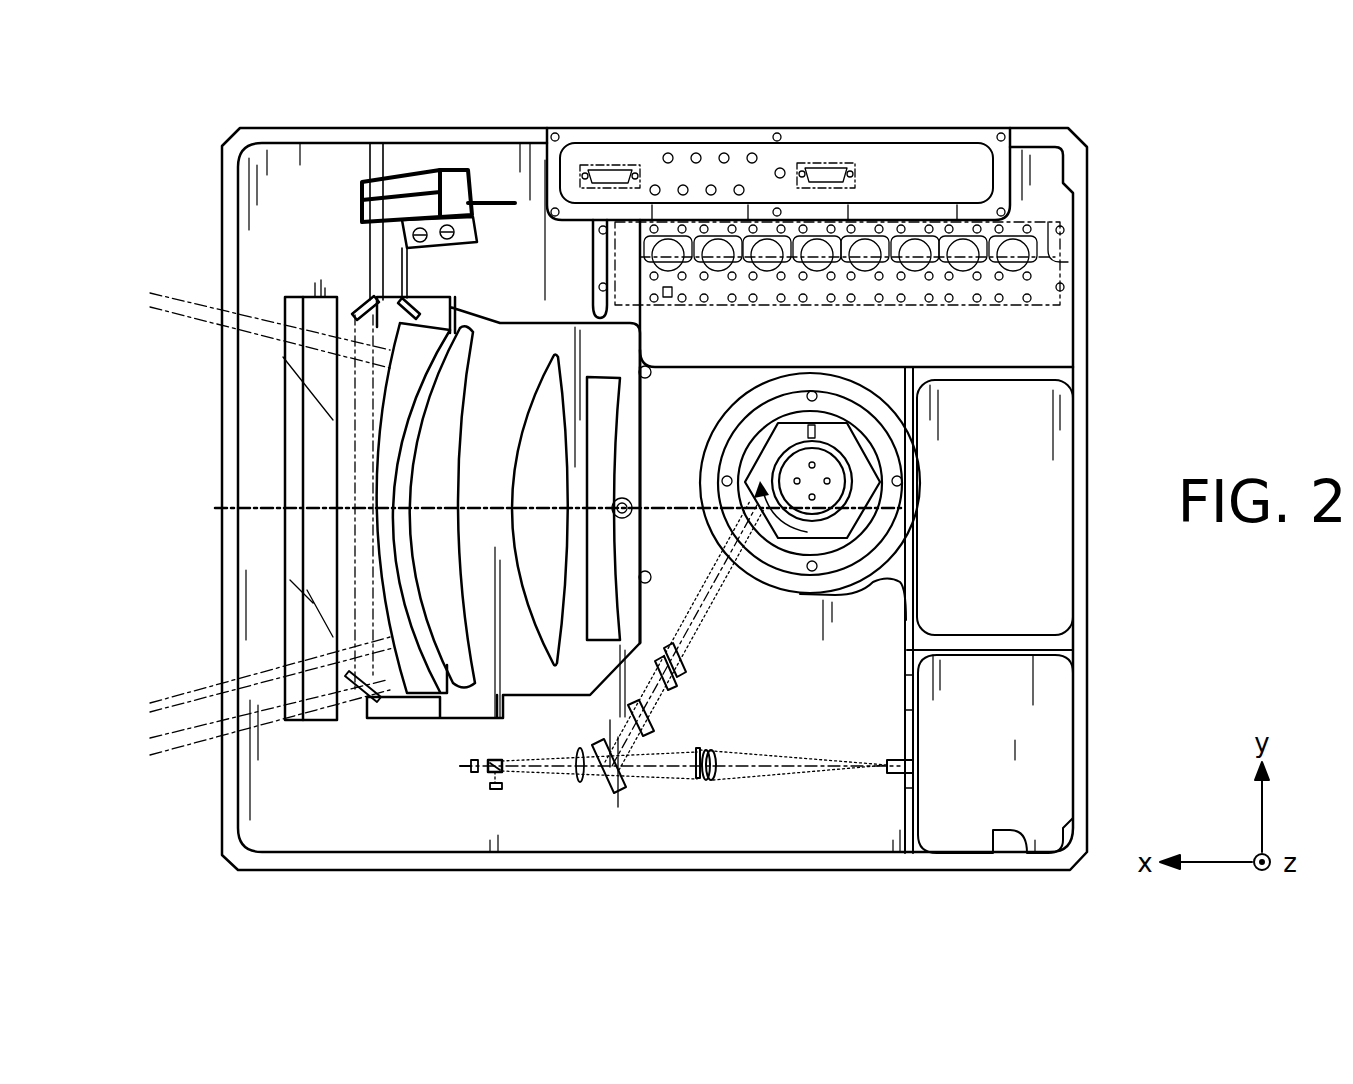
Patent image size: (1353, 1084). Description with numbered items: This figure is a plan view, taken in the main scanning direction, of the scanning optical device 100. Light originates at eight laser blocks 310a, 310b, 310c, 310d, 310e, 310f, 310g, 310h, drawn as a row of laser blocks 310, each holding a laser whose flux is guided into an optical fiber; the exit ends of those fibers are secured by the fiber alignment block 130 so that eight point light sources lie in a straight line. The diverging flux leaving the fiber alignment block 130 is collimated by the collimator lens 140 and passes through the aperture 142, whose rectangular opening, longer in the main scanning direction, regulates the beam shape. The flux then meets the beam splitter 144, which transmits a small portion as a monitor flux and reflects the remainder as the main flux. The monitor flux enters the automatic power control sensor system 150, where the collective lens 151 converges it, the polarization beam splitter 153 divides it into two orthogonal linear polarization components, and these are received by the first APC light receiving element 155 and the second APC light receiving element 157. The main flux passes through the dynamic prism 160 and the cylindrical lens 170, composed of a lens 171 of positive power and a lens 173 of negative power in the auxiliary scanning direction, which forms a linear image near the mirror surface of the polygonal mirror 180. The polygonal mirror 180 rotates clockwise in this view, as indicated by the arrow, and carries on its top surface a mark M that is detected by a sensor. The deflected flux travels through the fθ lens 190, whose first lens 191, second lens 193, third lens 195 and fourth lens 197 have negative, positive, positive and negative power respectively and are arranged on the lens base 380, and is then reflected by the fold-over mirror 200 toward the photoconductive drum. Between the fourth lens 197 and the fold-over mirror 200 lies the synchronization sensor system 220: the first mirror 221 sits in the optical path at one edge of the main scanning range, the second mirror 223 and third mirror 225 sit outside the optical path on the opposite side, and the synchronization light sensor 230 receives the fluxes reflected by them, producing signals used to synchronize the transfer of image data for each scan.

The apparatus housing 100 is at (1125, 276).
The fiber alignment block 130 is at (915, 758).
The collimator lens 140 is at (712, 781).
The aperture 142 is at (694, 781).
The beam splitter 144 is at (621, 781).
The automatic power control (APC) sensor system 150 is at (380, 825).
The collective lens 151 is at (580, 782).
The polarization beam splitter 153 is at (495, 790).
The first APC light receiving element 155 is at (475, 774).
The second APC light receiving element 157 is at (503, 768).
The dynamic prism 160 is at (656, 721).
The cylindrical lens 170 is at (768, 623).
The lens 171 is at (683, 684).
The lens 173 is at (687, 662).
The polygonal mirror 180 is at (872, 502).
The fθ lens 190 is at (413, 262).
The first lens 191 is at (590, 340).
The second lens 193 is at (532, 355).
The third lens 195 is at (463, 327).
The fourth lens 197 is at (423, 320).
The fold-over mirror 200 is at (320, 722).
The synchronization sensor system 220 is at (165, 350).
The first mirror 221 is at (355, 698).
The second mirror 223 is at (368, 320).
The third mirror 225 is at (372, 324).
The synchronization light sensor 230 is at (402, 221).
The terminal block 310 is at (1057, 245).
The laser block 310a is at (693, 287).
The laser block 310b is at (715, 277).
The laser block 310c is at (763, 277).
The laser block 310d is at (817, 280).
The laser block 310e is at (865, 280).
The laser block 310f is at (917, 280).
The laser block 310g is at (967, 280).
The laser block 310h is at (1013, 280).
The lens base 380 is at (640, 453).
The mark M is at (817, 424).